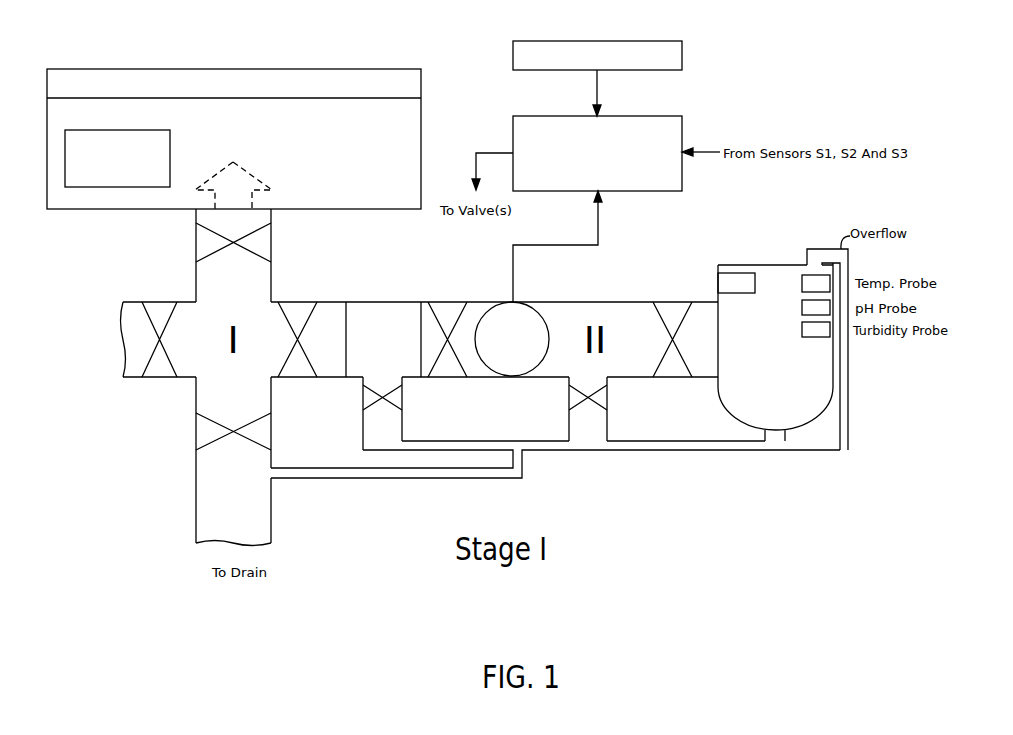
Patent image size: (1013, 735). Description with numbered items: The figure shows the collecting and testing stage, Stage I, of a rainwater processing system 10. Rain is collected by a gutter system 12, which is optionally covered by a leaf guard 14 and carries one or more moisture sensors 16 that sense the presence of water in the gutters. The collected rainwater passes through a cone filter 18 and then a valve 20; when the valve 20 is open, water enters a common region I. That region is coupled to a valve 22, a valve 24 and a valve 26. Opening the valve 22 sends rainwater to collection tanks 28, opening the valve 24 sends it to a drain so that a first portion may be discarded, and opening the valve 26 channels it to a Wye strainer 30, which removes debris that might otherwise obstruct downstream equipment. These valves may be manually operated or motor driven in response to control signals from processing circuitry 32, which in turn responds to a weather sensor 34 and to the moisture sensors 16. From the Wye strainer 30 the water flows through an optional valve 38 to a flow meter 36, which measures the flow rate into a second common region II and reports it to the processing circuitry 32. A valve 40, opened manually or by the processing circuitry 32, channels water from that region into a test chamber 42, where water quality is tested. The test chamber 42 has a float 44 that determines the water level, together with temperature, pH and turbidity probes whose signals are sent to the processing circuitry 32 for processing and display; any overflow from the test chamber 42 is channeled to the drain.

The rainwater processing system 10 is at (468, 60).
The gutter system 12 is at (234, 139).
The leaf guard 14 is at (234, 87).
The moisture sensors 16 is at (117, 158).
The cone filter 18 is at (262, 182).
The valve 20 is at (257, 244).
The valve 22 is at (162, 300).
The valve 24 is at (200, 437).
The valve 26 is at (303, 300).
The collection tanks 28 is at (77, 339).
The Wye strainer 30 is at (383, 339).
The processing circuitry 32 is at (596, 153).
The weather sensor 34 is at (597, 78).
The flow meter 36 is at (512, 339).
The valve 38 is at (448, 312).
The valve 40 is at (683, 302).
The test chamber 42 is at (784, 338).
The float 44 is at (738, 288).